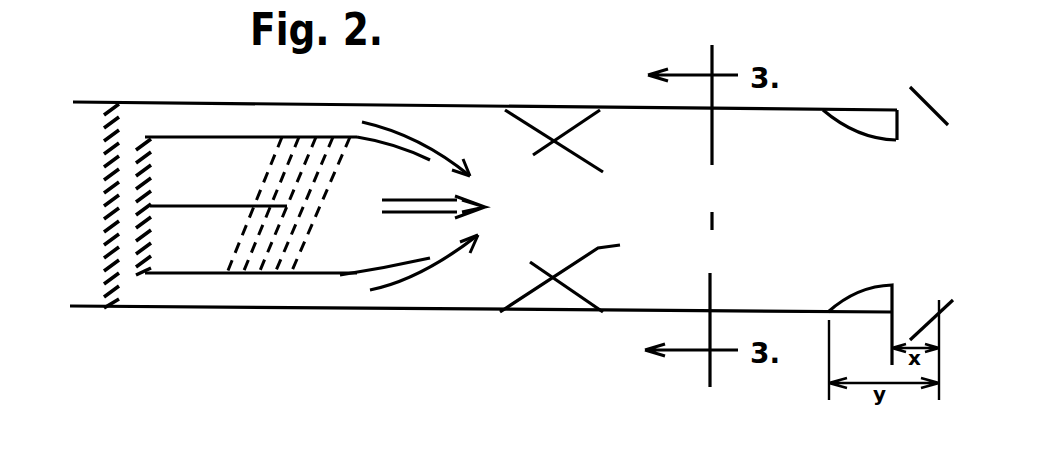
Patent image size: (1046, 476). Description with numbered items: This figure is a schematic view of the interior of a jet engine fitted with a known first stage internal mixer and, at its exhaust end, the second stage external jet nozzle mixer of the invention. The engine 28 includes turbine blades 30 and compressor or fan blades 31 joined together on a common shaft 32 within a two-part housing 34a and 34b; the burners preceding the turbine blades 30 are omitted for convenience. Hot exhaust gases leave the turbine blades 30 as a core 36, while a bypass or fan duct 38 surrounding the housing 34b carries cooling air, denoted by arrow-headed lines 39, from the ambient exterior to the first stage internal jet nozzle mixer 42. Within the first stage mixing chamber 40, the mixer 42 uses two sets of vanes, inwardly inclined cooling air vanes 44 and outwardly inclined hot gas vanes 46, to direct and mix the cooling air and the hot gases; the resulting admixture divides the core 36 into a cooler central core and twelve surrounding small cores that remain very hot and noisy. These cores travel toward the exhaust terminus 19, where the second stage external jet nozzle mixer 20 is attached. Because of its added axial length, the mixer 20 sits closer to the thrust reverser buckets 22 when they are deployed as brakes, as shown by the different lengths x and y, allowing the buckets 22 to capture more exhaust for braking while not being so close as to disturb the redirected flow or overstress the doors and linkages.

The exhaust terminus 19 is at (854, 208).
The jet nozzle mixer 20 is at (853, 136).
The thrust reverser buckets 22 is at (928, 112).
The engine 28 is at (85, 271).
The turbine blades 30 is at (287, 247).
The compressor or fan blades 31 is at (136, 179).
The common shaft 32 is at (207, 205).
The housing part 34a is at (122, 102).
The housing part 34b is at (228, 136).
The core 36 is at (405, 213).
The bypass or fan duct 38 is at (195, 292).
The arrow-headed lines 39 is at (428, 138).
The first stage mixing chamber 40 is at (578, 222).
The first stage internal jet nozzle mixer 42 is at (588, 181).
The cooling air vanes 44 is at (587, 125).
The hot gas vanes 46 is at (603, 170).